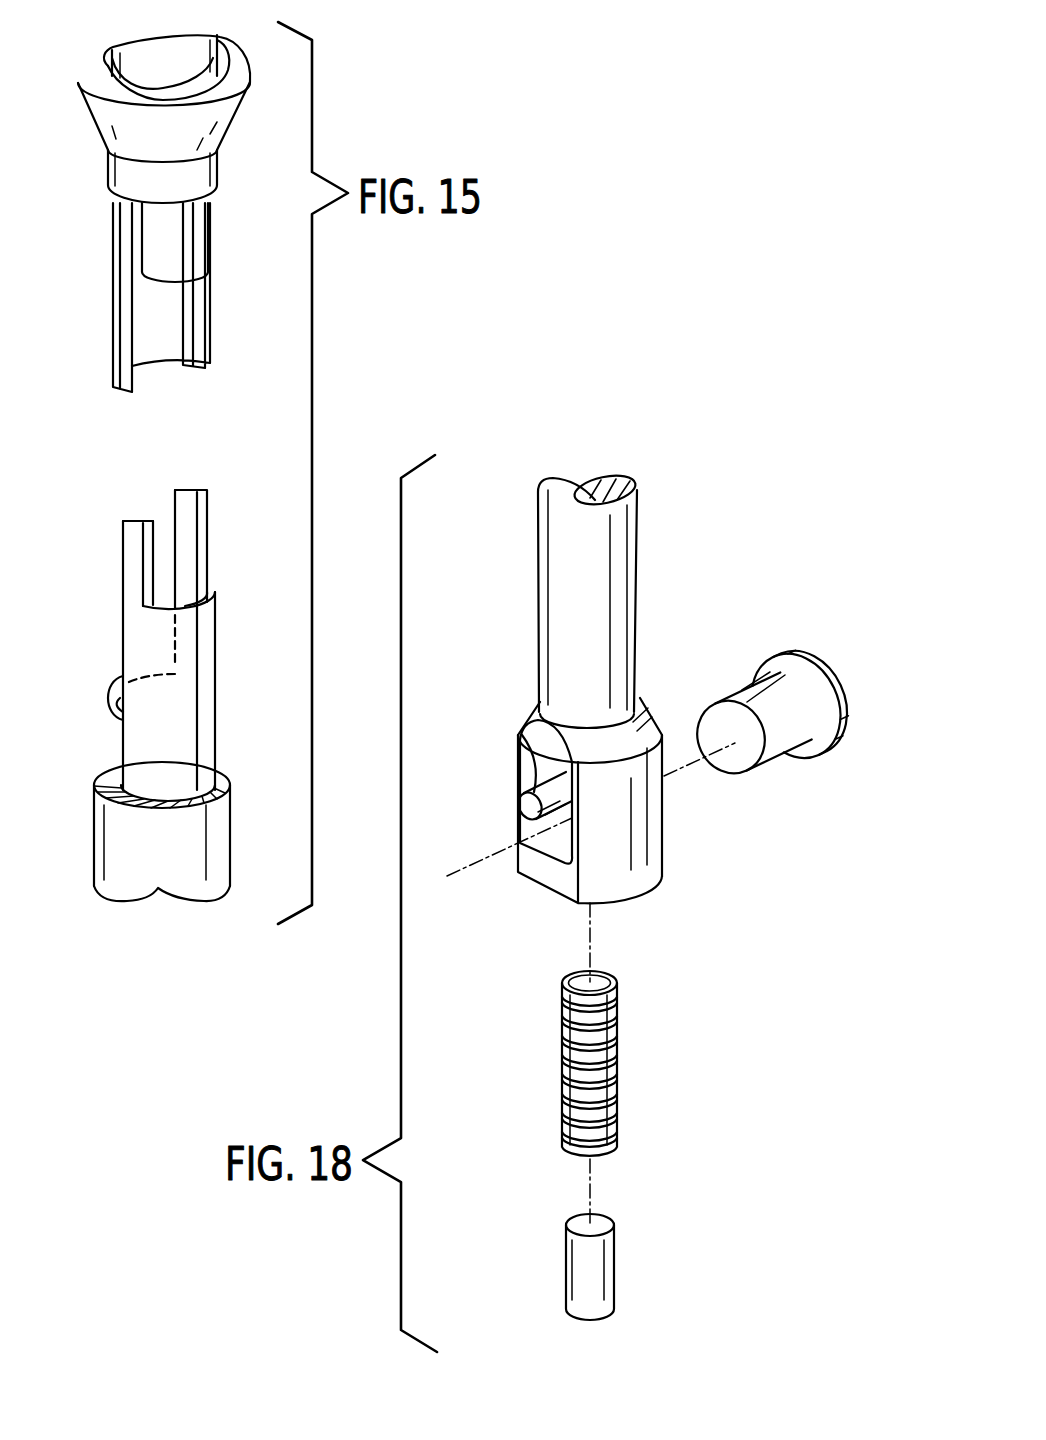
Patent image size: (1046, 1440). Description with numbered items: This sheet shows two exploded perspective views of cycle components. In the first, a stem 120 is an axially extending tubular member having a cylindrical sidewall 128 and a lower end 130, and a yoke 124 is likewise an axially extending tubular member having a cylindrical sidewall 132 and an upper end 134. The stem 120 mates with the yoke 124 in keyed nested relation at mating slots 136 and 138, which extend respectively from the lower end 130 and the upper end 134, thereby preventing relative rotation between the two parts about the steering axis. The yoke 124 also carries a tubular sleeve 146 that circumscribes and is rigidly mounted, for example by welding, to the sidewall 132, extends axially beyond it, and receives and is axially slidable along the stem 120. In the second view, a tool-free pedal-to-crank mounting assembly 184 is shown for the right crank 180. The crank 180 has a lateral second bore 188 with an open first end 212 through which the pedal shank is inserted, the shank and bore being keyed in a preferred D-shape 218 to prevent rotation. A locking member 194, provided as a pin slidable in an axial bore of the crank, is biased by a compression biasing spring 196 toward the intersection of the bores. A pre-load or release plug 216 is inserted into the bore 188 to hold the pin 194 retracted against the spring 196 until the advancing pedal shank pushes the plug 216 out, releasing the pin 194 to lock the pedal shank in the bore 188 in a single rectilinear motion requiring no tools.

In FIG. 15, the stem 120 is at (108, 153).
In FIG. 15, the cylindrical sidewall 128 is at (113, 275).
In FIG. 15, the lower end 130 is at (120, 392).
In FIG. 15, the mating slot 136 is at (140, 288).
In FIG. 15, the mating slot 138 is at (165, 535).
In FIG. 15, the upper end 134 is at (191, 488).
In FIG. 15, the cylindrical sidewall 132 is at (218, 704).
In FIG. 15, the tubular sleeve 146 is at (216, 762).
In FIG. 15, the yoke 124 is at (92, 843).
In FIG. 18, the right crank 180 is at (637, 528).
In FIG. 18, the tool-free pedal-to-crank mounting assembly 184 is at (463, 793).
In FIG. 18, the first end 212 is at (520, 738).
In FIG. 18, the second bore 188 is at (531, 809).
In FIG. 18, the pre-load or release plug 216 is at (730, 693).
In FIG. 18, the D-shape 218 is at (745, 755).
In FIG. 18, the compression biasing spring 196 is at (617, 1091).
In FIG. 18, the locking member 194 is at (616, 1270).